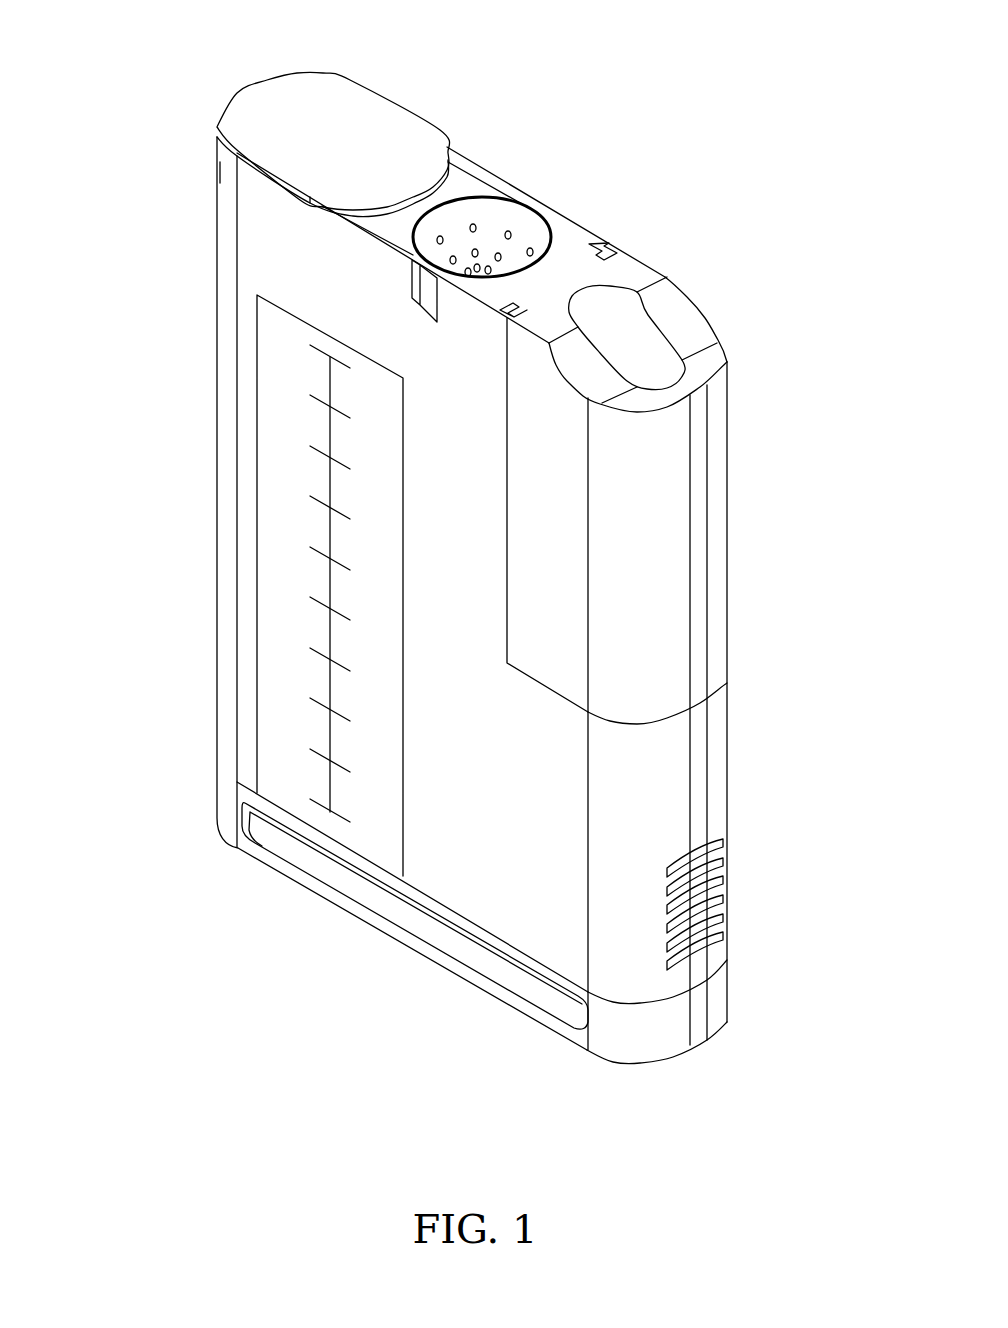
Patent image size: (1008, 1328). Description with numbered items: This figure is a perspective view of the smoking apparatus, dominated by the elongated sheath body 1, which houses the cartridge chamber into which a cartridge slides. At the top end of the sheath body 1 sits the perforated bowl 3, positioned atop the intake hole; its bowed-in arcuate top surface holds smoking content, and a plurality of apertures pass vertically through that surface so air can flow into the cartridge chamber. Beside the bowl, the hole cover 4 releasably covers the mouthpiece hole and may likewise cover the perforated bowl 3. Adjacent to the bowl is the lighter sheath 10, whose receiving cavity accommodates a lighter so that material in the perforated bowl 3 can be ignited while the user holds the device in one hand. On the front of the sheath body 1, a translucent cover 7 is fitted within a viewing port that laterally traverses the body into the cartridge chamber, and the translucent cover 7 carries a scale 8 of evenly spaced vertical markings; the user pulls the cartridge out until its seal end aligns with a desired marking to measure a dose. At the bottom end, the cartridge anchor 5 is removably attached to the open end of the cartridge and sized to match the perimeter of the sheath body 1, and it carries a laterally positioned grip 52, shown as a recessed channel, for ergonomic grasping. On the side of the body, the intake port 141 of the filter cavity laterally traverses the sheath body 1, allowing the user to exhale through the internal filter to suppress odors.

The sheath body 1 is at (257, 218).
The perforated bowl 3 is at (525, 223).
The hole cover 4 is at (363, 107).
The cartridge anchor 5 is at (642, 1050).
The translucent cover 7 is at (278, 502).
The scale 8 is at (330, 660).
The lighter sheath 10 is at (672, 438).
The grip 52 is at (410, 912).
The intake port 141 is at (717, 883).